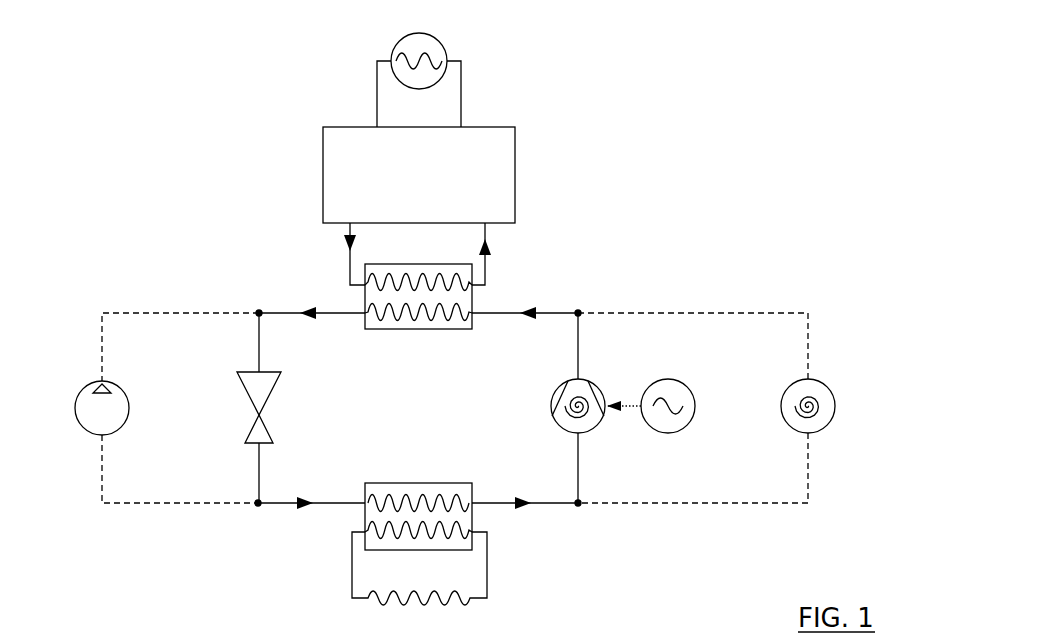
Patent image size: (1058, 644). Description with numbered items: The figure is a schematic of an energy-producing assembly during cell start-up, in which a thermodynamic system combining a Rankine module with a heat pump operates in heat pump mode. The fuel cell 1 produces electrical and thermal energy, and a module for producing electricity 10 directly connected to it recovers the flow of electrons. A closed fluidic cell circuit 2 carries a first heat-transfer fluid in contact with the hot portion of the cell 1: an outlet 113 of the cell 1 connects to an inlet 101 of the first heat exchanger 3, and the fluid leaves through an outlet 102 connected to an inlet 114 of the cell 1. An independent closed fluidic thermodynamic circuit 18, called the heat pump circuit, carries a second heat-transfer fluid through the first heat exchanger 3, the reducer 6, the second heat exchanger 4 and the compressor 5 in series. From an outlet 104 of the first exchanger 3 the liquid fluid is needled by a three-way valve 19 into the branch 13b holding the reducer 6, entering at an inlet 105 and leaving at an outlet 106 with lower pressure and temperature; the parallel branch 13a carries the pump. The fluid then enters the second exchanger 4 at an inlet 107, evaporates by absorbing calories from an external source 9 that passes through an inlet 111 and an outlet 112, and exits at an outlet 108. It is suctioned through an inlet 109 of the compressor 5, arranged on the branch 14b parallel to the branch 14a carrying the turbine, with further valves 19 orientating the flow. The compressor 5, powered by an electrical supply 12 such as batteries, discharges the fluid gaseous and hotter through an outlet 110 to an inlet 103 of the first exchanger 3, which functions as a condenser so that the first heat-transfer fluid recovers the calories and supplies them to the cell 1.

The fuel cell 1 is at (487, 127).
The module for producing electricity 10 is at (392, 50).
The fluidic cell circuit 2 is at (484, 258).
The first heat exchanger 3 is at (413, 265).
The second heat exchanger 4 is at (382, 483).
The compressor 5 is at (553, 405).
The reducer 6 is at (257, 430).
The external source 9 is at (488, 574).
The electrical supply 12 is at (666, 381).
The branch 13a is at (97, 510).
The branch 13b is at (256, 510).
The branch 14a is at (806, 508).
The branch 14b is at (580, 510).
The fluidic thermodynamic circuit 18 is at (259, 311).
The three-way valve 19 is at (258, 316).
The inlet 101 is at (364, 285).
The outlet 102 is at (473, 285).
The inlet 103 is at (473, 313).
The outlet 104 is at (364, 313).
The inlet 105 is at (263, 371).
The outlet 106 is at (263, 444).
The inlet 107 is at (364, 501).
The outlet 108 is at (473, 501).
The inlet 109 is at (581, 434).
The outlet 110 is at (581, 378).
The inlet 111 is at (364, 532).
The outlet 112 is at (473, 532).
The outlet 113 is at (347, 228).
The inlet 114 is at (488, 228).